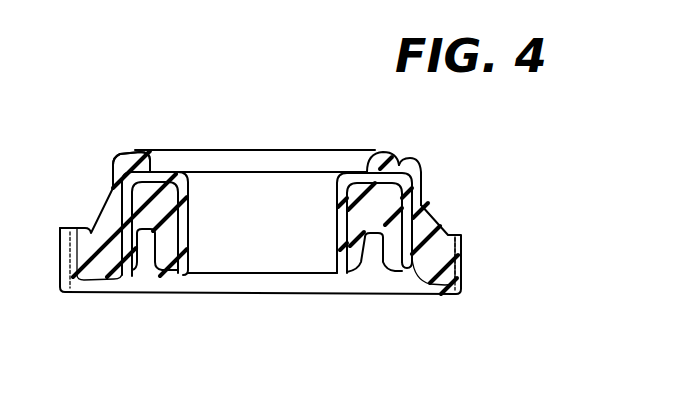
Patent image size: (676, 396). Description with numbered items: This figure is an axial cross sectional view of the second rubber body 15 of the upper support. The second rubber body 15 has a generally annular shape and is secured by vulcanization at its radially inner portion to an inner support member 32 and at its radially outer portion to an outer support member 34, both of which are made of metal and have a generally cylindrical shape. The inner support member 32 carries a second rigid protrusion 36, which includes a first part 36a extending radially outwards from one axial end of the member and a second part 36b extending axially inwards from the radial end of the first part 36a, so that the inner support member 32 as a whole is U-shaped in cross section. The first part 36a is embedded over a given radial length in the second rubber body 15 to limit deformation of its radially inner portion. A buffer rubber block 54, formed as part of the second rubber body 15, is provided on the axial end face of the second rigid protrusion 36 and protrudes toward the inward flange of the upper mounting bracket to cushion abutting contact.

The second rubber body 15 is at (432, 222).
The inner support member 32 is at (200, 249).
The outer support member 34 is at (466, 250).
The second rigid protrusion 36 is at (490, 103).
The first part 36a is at (388, 153).
The second part 36b is at (417, 172).
The buffer rubber block 54 is at (138, 148).